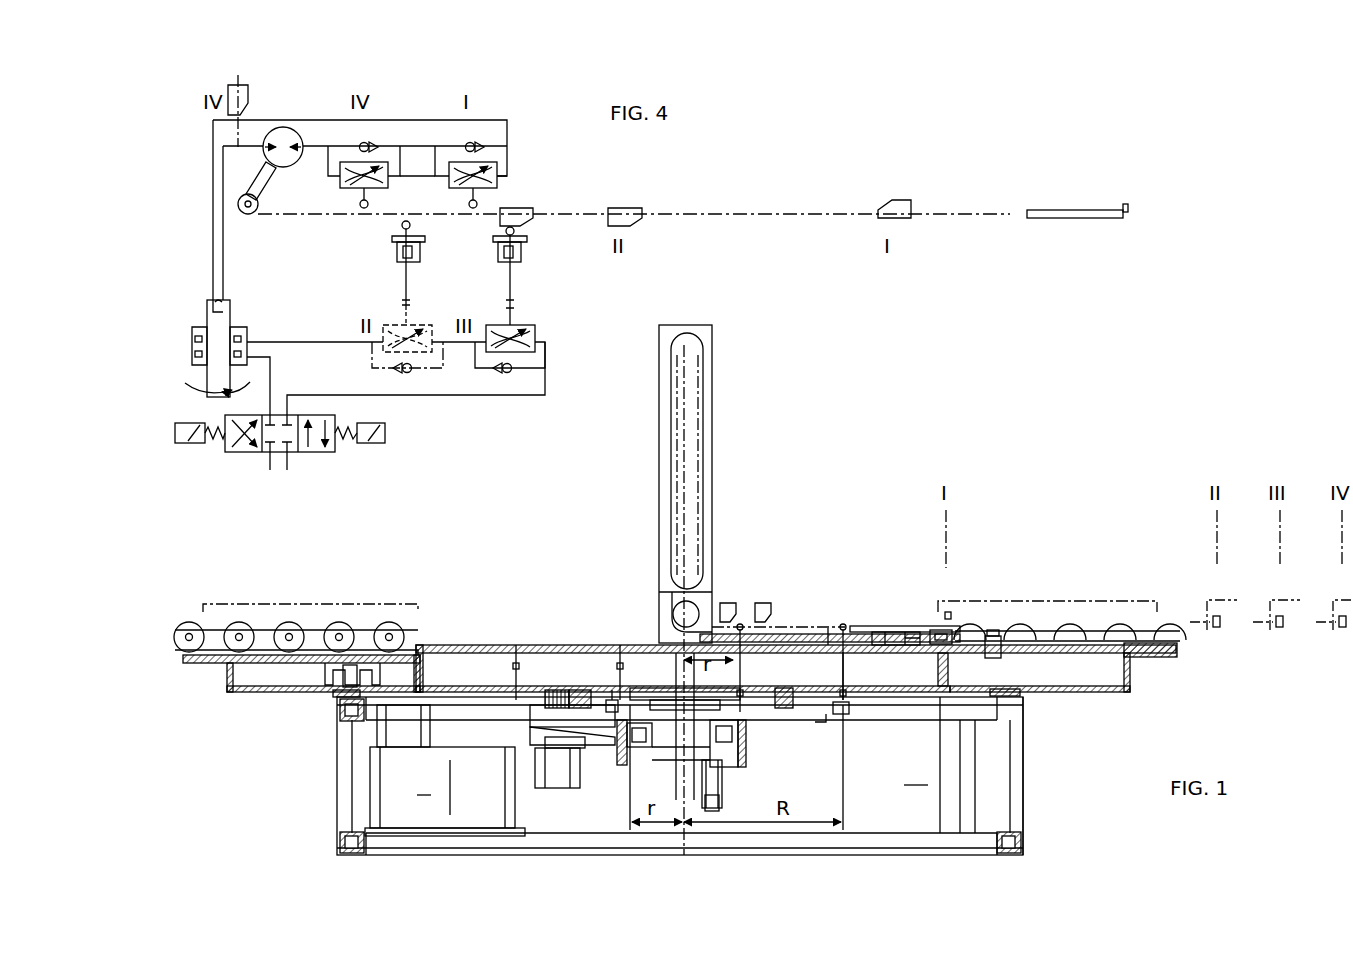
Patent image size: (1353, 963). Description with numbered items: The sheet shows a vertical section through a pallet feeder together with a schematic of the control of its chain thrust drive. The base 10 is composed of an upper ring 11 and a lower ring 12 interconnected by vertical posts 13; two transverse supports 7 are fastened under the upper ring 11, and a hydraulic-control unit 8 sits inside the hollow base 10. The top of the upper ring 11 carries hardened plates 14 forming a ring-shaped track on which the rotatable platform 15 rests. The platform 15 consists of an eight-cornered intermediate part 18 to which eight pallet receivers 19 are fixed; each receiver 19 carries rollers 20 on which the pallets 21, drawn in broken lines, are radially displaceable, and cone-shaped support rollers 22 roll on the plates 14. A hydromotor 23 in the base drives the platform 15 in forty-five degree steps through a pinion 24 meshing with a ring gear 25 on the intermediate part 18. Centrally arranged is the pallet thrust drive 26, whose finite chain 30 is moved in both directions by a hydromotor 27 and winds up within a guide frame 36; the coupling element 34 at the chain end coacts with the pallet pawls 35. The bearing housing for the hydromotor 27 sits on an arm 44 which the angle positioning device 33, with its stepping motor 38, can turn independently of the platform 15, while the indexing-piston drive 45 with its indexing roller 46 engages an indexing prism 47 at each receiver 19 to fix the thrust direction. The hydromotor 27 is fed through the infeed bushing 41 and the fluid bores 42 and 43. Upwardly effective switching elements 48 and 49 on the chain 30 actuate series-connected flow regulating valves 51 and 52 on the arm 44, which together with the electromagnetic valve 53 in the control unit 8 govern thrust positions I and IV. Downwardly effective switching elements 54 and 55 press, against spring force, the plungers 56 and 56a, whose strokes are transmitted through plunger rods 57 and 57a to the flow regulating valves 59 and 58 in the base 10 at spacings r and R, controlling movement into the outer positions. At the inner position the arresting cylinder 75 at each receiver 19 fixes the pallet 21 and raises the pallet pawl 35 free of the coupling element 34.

In FIG. 1, the transverse support 7 is at (641, 750).
In FIG. 1, the hydraulic-control unit 8 is at (445, 770).
In FIG. 1, the base 10 is at (680, 776).
In FIG. 1, the upper ring 11 is at (908, 712).
In FIG. 1, the lower ring 12 is at (1015, 840).
In FIG. 1, the vertical post 13 is at (1015, 786).
In FIG. 1, the hardened plate 14 is at (340, 696).
In FIG. 1, the rotatable platform 15 is at (440, 645).
In FIG. 1, the intermediate part 18 is at (565, 660).
In FIG. 1, the pallet receiver 19 is at (240, 681).
In FIG. 1, the roller 20 is at (341, 630).
In FIG. 1, the pallet 21 is at (408, 606).
In FIG. 1, the support roller 22 is at (345, 722).
In FIG. 1, the hydromotor 23 is at (552, 790).
In FIG. 1, the pinion 24 is at (556, 690).
In FIG. 1, the ring gear 25 is at (784, 708).
In FIG. 1, the pallet thrust drive 26 is at (654, 607).
In FIG. 4, the hydromotor 27 is at (287, 134).
In FIG. 4, the chain 30 is at (756, 211).
In FIG. 1, the chain 30 is at (705, 400).
In FIG. 1, the angle positioning device 33 is at (726, 785).
In FIG. 1, the coupling element 34 is at (915, 626).
In FIG. 1, the pallet pawl 35 is at (950, 612).
In FIG. 1, the guide frame 36 is at (712, 372).
In FIG. 1, the stepping motor 38 is at (720, 806).
In FIG. 4, the infeed bushing 41 is at (235, 330).
In FIG. 4, the fluid bore 42 is at (213, 266).
In FIG. 4, the fluid bore 43 is at (225, 266).
In FIG. 1, the arm 44 is at (828, 638).
In FIG. 1, the indexing-piston drive 45 is at (880, 632).
In FIG. 1, the indexing roller 46 is at (935, 646).
In FIG. 1, the indexing prism 47 is at (950, 660).
In FIG. 4, the switching element 48 is at (250, 97).
In FIG. 4, the switching element 49 is at (883, 203).
In FIG. 4, the flow regulating valve 51 is at (332, 180).
In FIG. 1, the flow regulating valve 51 is at (728, 602).
In FIG. 4, the flow regulating valve 52 is at (441, 178).
In FIG. 1, the flow regulating valve 52 is at (763, 602).
In FIG. 4, the electromagnetic valve 53 is at (240, 453).
In FIG. 4, the switching element 54 is at (515, 207).
In FIG. 4, the switching element 55 is at (620, 207).
In FIG. 4, the plunger 56 is at (527, 252).
In FIG. 1, the plunger 56 is at (742, 660).
In FIG. 4, the plunger 56a is at (425, 252).
In FIG. 1, the plunger 56a is at (845, 660).
In FIG. 4, the plunger rod 57 is at (514, 284).
In FIG. 1, the plunger rod 57 is at (620, 650).
In FIG. 4, the plunger rod 57a is at (410, 284).
In FIG. 1, the plunger rod 57a is at (516, 650).
In FIG. 4, the flow regulating valve 58 is at (545, 358).
In FIG. 1, the flow regulating valve 58 is at (850, 708).
In FIG. 4, the flow regulating valve 59 is at (372, 345).
In FIG. 1, the flow regulating valve 59 is at (607, 698).
In FIG. 1, the arresting cylinder 75 is at (1001, 652).